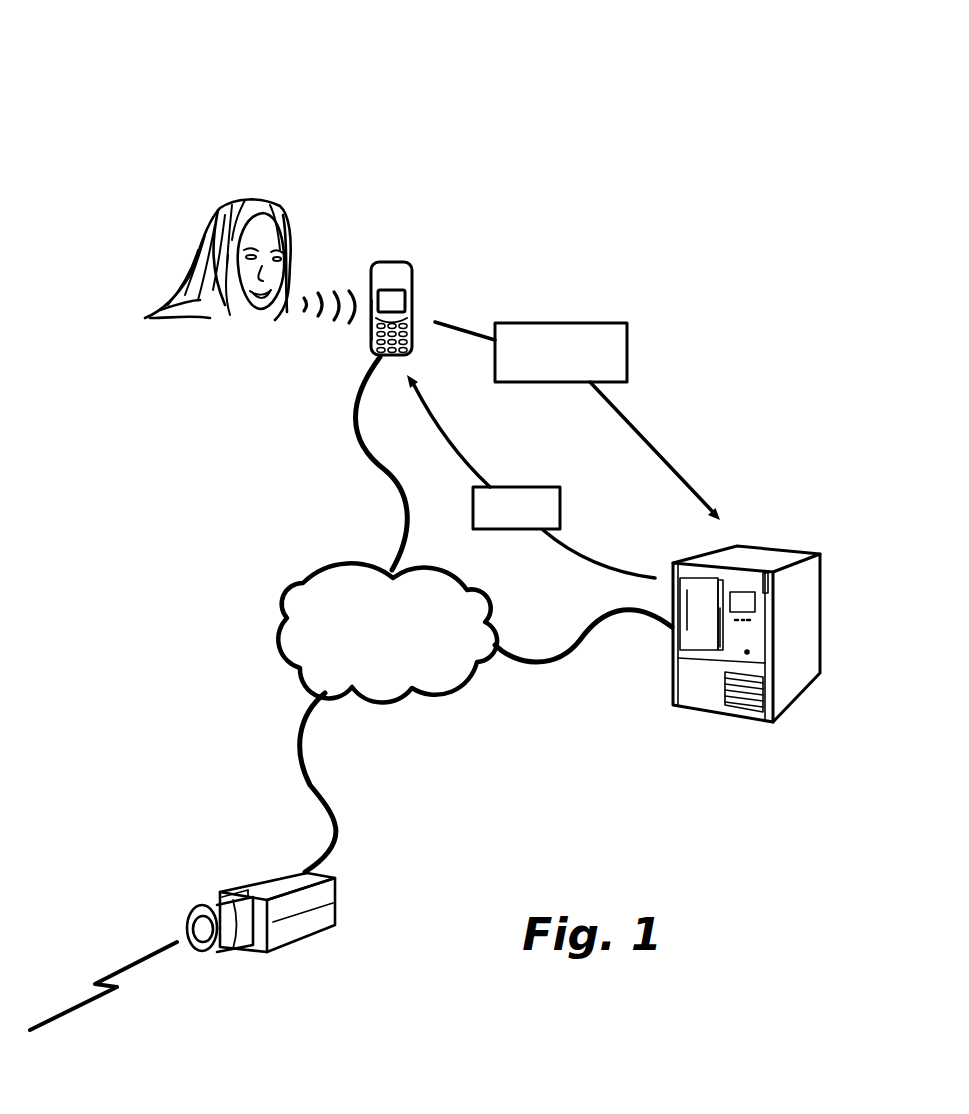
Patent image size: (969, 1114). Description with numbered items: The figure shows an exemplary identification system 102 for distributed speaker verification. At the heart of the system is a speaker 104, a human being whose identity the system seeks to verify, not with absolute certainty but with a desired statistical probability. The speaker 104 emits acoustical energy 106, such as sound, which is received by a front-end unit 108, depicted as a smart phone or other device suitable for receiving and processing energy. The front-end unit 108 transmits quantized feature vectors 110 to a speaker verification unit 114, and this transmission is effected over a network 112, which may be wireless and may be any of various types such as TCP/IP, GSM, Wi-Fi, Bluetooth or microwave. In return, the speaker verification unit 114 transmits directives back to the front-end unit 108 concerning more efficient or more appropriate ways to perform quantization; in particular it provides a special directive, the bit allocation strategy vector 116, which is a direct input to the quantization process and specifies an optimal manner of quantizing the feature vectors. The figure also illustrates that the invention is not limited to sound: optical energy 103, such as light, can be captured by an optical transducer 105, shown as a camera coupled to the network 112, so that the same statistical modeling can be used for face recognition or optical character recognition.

The identification system 102 is at (543, 108).
The optical energy 103 is at (118, 971).
The speaker 104 is at (219, 204).
The optical transducer 105 is at (247, 955).
The acoustical energy 106 is at (327, 291).
The front-end unit 108 is at (411, 275).
The quantized feature vectors 110 is at (571, 323).
The network 112 is at (385, 706).
The speaker verification unit 114 is at (683, 711).
The bit allocation strategy vector (BASV) 116 is at (529, 487).